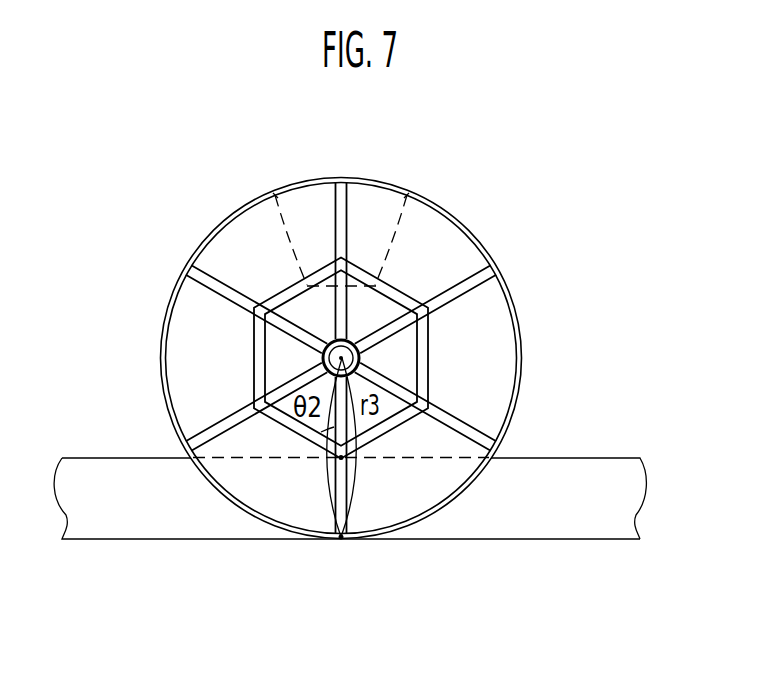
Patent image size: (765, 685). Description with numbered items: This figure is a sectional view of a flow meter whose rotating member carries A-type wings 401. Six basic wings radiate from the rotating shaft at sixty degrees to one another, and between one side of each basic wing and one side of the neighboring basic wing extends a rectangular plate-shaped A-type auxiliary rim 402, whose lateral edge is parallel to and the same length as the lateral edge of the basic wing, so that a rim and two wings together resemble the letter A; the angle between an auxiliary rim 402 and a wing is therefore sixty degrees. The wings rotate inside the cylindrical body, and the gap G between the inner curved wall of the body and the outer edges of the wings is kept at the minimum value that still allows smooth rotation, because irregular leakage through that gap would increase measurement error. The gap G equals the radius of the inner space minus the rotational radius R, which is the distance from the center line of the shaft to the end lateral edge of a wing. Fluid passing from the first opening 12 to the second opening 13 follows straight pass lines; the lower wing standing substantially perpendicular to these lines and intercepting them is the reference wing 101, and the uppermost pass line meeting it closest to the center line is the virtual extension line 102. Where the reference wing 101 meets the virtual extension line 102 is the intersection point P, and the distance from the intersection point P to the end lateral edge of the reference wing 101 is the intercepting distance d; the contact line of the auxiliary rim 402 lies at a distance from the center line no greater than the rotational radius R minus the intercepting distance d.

The A-type wing 401 is at (343, 213).
The A-type auxiliary rim 402 is at (430, 358).
The reference wing 101 is at (342, 537).
The virtual extension line 102 is at (435, 458).
The first opening 12 is at (105, 520).
The second opening 13 is at (572, 522).
The gap G is at (500, 448).
The intersection point P is at (332, 459).
The rotational radius R is at (322, 482).
The intercepting distance d is at (366, 497).